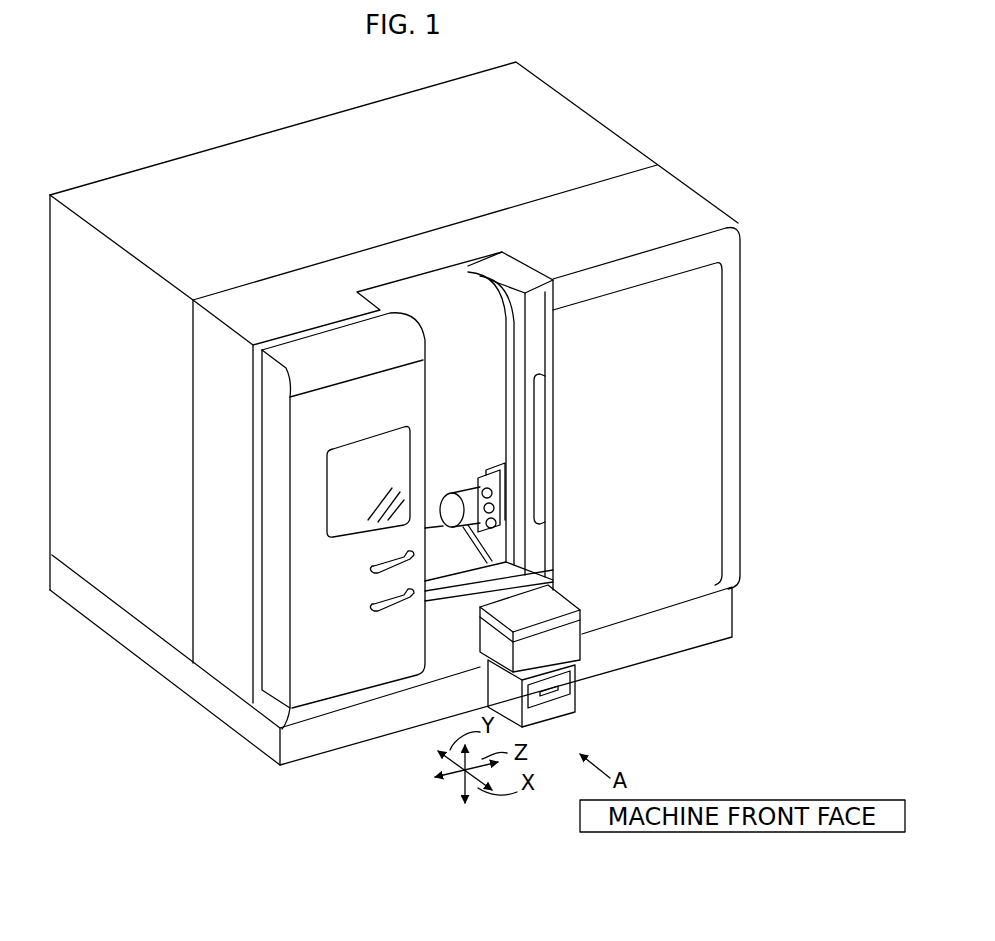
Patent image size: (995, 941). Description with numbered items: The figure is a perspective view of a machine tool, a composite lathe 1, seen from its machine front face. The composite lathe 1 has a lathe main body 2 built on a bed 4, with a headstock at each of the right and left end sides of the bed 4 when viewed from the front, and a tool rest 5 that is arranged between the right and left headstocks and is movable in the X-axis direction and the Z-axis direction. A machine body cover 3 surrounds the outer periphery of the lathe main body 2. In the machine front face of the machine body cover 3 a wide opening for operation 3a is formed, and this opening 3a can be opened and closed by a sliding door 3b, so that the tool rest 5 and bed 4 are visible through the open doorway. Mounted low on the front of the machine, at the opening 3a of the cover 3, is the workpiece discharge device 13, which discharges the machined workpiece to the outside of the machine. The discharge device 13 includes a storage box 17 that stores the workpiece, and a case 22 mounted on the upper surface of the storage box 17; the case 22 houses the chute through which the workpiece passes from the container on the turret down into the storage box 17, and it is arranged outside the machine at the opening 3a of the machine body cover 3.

The composite lathe 1 is at (680, 160).
The lathe main body 2 is at (433, 423).
The machine body cover 3 is at (752, 343).
The opening 3a is at (472, 280).
The sliding door 3b is at (538, 342).
The bed 4 is at (436, 524).
The tool rest 5 is at (472, 471).
The workpiece discharge device 13 is at (583, 605).
The storage box 17 is at (582, 698).
The case 22 is at (586, 639).